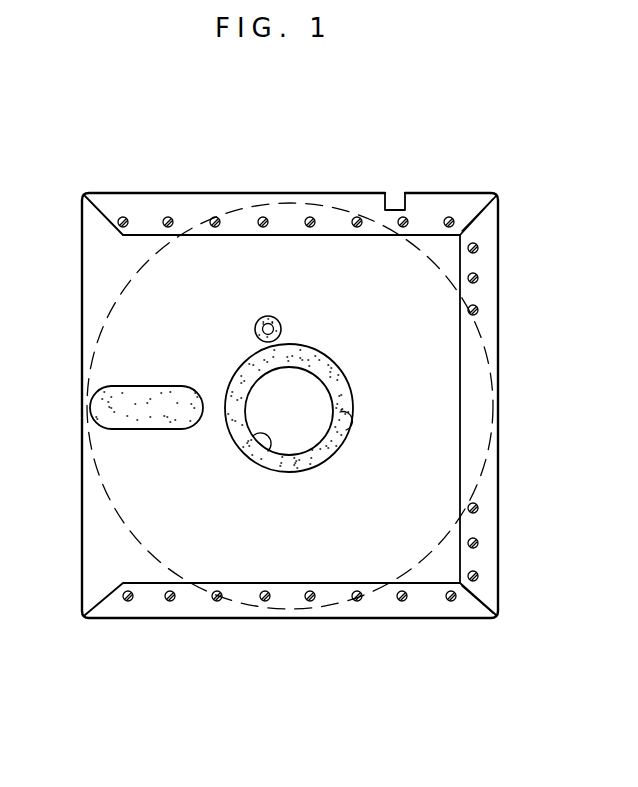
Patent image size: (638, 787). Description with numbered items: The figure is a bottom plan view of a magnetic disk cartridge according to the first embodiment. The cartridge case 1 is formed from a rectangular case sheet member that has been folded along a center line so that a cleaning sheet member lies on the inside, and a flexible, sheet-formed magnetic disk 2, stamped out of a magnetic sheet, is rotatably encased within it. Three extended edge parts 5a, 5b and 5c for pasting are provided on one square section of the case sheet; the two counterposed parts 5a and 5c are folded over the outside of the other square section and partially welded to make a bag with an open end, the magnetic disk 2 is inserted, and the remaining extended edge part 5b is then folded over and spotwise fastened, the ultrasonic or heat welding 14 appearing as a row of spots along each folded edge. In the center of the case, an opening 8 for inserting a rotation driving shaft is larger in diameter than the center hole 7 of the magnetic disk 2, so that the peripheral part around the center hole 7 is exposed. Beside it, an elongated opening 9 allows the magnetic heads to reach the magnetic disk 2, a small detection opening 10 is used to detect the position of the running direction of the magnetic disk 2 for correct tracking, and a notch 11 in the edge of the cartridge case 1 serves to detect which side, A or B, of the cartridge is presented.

The cartridge case 1 is at (82, 268).
The magnetic disk 2 is at (100, 522).
The extended edge part 5a is at (190, 198).
The extended edge part 5b is at (488, 324).
The extended edge part 5c is at (182, 608).
The center hole 7 is at (259, 444).
The opening for inserting a rotation driving shaft 8 is at (347, 428).
The opening for inserting magnetic heads 9 is at (145, 428).
The detection opening 10 is at (281, 322).
The notch 11 is at (397, 200).
The ultrasonic or heat welding 14 is at (312, 202).